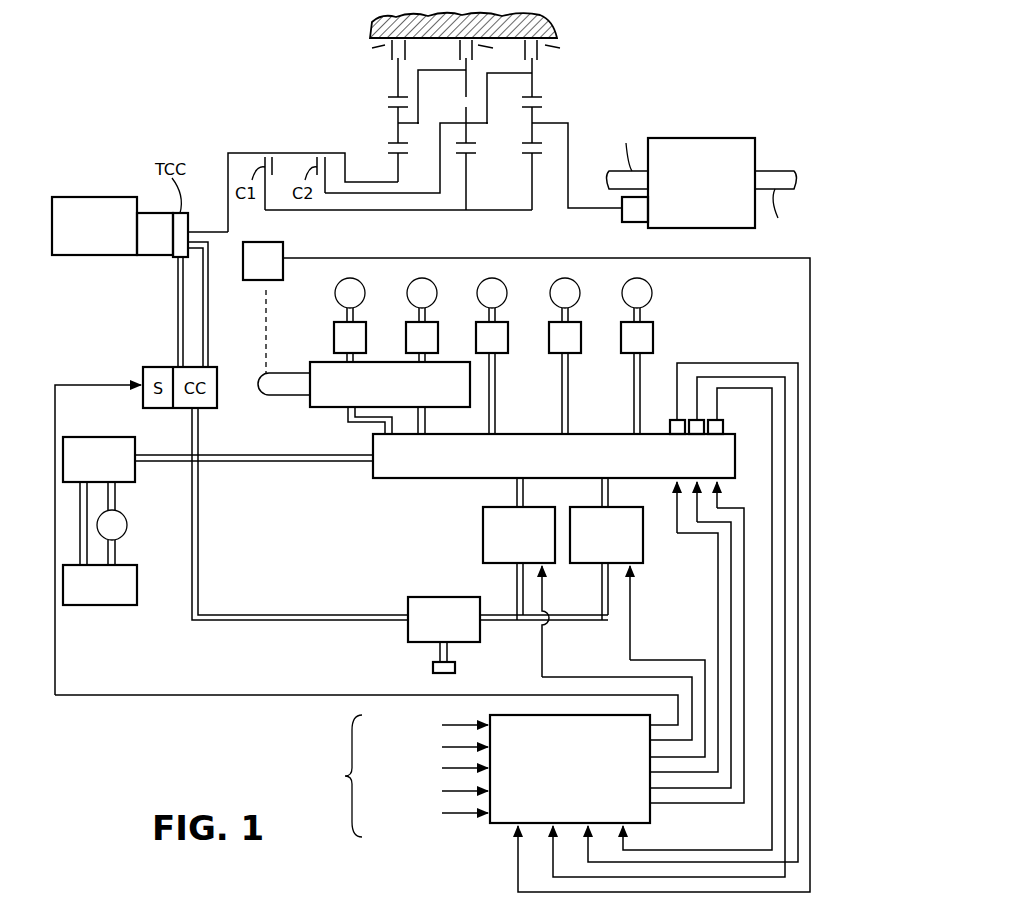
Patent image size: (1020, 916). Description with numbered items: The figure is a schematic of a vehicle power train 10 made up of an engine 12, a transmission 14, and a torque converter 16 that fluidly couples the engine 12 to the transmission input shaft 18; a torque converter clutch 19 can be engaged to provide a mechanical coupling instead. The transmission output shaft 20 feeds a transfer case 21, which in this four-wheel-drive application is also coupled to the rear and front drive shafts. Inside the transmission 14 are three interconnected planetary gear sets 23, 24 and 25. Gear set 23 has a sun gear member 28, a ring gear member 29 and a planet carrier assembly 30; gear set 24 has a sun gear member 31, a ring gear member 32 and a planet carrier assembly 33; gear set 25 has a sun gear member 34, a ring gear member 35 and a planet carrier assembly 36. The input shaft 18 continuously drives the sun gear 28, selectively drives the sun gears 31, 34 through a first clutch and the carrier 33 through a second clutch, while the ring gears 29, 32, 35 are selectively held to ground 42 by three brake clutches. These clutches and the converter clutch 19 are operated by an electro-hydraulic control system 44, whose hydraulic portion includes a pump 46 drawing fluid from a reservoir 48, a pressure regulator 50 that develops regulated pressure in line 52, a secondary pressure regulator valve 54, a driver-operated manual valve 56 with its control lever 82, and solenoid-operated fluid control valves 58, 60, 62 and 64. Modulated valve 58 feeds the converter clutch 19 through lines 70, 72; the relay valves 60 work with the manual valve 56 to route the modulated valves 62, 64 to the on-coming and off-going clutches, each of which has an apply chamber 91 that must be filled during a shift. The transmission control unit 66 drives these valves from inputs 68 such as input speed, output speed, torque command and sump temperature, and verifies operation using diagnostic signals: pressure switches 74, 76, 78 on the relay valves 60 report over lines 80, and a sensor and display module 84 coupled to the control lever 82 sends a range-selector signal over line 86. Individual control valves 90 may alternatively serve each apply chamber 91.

The vehicle power train 10 is at (240, 93).
The engine 12 is at (95, 258).
The transmission 14 is at (355, 118).
The torque converter 16 is at (152, 258).
The transmission input shaft 18 is at (240, 150).
The torque converter clutch 19 is at (190, 226).
The transmission output shaft 20 is at (583, 212).
The transfer case 21 is at (685, 138).
The planetary gear set 23 is at (407, 130).
The planetary gear set 24 is at (472, 130).
The planetary gear set 25 is at (542, 117).
The sun gear member 28 is at (390, 153).
The ring gear member 29 is at (390, 95).
The planet carrier assembly 30 is at (419, 123).
The sun gear member 31 is at (474, 160).
The ring gear member 32 is at (522, 212).
The planet carrier assembly 33 is at (488, 123).
The sun gear member 34 is at (535, 157).
The ring gear member 35 is at (541, 96).
The planet carrier assembly 36 is at (568, 128).
The ground 42 is at (557, 30).
The electro-hydraulic control system 44 is at (838, 308).
The pump 46 is at (128, 525).
The reservoir 48 is at (137, 590).
The pressure regulator 50 is at (112, 437).
The line 52 is at (272, 463).
The secondary pressure regulator valve 54 is at (408, 632).
The manual valve 56 is at (312, 410).
The solenoid-operated fluid control valve 58 is at (218, 385).
The relay valves 60 is at (385, 480).
The modulated valve 62 is at (483, 548).
The modulated valve 64 is at (643, 548).
The transmission control unit 66 is at (500, 826).
The inputs 68 is at (403, 776).
The line 70 is at (176, 343).
The line 72 is at (212, 343).
The pressure switch 74 is at (676, 419).
The pressure switch 76 is at (695, 419).
The pressure switch 78 is at (725, 426).
The lines 80 is at (774, 387).
The control lever 82 is at (292, 398).
The sensor and display module 84 is at (290, 250).
The line 86 is at (698, 258).
The fluid control valve 90 is at (378, 305).
The apply chamber 91 is at (337, 302).